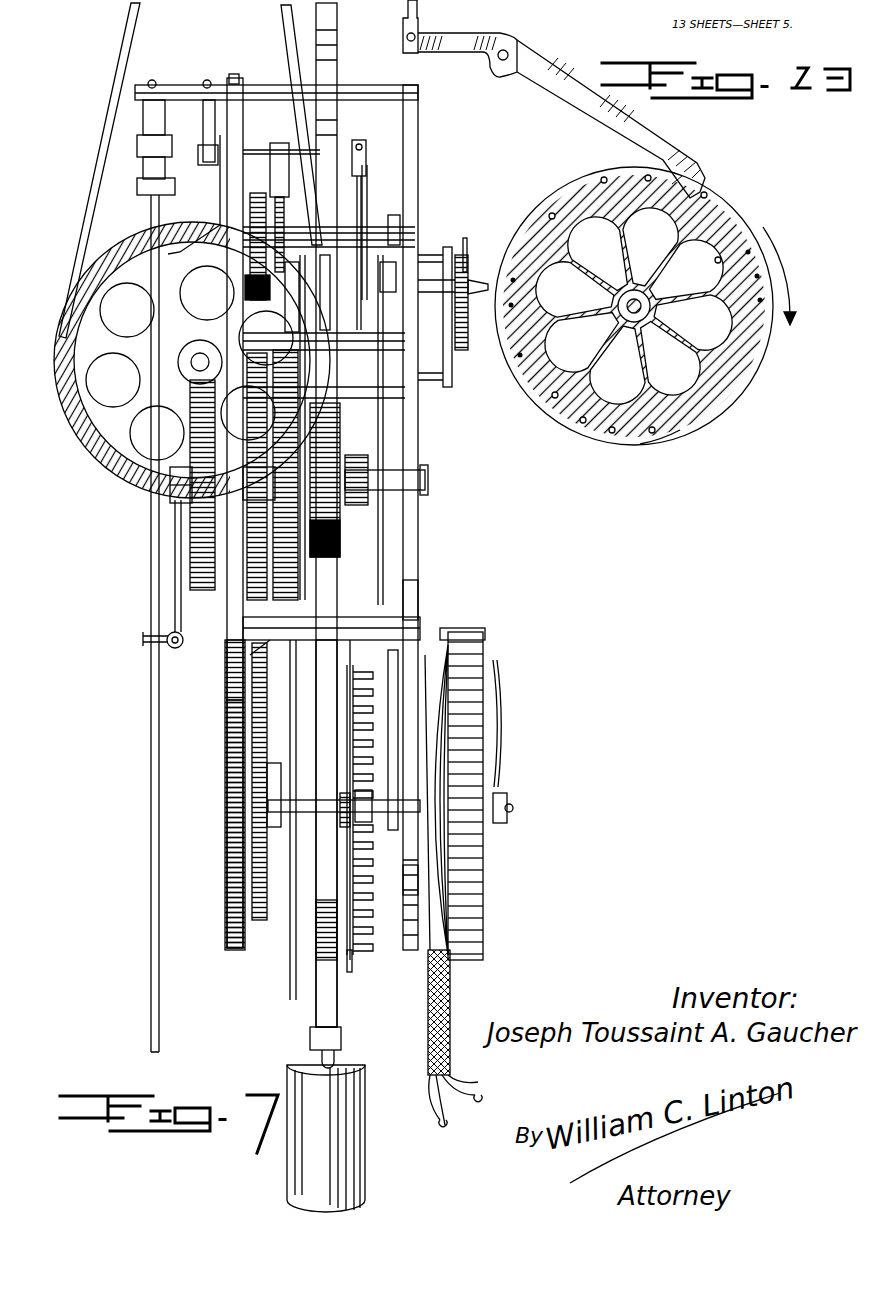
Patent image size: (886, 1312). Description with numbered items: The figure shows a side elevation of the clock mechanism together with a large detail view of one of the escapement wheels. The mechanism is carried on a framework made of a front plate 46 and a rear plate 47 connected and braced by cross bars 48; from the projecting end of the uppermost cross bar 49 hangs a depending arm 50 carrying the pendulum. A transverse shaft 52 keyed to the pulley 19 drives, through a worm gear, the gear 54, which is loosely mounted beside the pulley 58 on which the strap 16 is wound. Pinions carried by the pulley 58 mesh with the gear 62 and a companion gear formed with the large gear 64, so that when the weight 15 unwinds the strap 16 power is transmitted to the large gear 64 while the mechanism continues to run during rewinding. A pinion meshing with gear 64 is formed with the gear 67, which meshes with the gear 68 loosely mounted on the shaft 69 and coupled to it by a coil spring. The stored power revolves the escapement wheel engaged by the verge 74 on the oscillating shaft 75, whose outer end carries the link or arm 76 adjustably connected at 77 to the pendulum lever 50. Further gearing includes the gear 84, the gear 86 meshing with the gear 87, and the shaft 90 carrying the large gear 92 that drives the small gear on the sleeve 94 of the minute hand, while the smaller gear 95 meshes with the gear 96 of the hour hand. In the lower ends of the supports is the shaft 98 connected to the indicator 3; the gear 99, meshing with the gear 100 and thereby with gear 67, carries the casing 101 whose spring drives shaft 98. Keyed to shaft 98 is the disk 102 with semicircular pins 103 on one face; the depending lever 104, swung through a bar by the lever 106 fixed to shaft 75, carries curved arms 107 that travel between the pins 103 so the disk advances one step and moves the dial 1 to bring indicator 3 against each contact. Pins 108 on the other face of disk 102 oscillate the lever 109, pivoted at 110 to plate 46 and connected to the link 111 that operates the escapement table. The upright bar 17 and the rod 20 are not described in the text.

In FIG. 7, the dial 1 is at (485, 870).
In FIG. 7, the indicator 3 is at (498, 720).
In FIG. 7, the weight 15 is at (366, 1166).
In FIG. 7, the strap 16 is at (320, 975).
In FIG. 7, the upright bar 17 is at (337, 40).
In FIG. 7, the pulley 19 is at (125, 278).
In FIG. 7, the rod 20 is at (138, 24).
In FIG. 7, the front plate 46 is at (416, 558).
In FIG. 7, the rear plate 47 is at (235, 672).
In FIG. 7, the cross bars 48 is at (306, 640).
In FIG. 7, the uppermost cross bar 49 is at (172, 93).
In FIG. 7, the depending arm 50 is at (151, 806).
In FIG. 7, the transversely extending shaft 52 is at (190, 372).
In FIG. 7, the gear 54 is at (185, 545).
In FIG. 7, the pulley 58 is at (345, 542).
In FIG. 7, the gear 62 is at (372, 480).
In FIG. 7, the large gear 64 is at (280, 570).
In FIG. 7, the gear 67 is at (200, 480).
In FIG. 7, the gear 68 is at (259, 215).
In FIG. 7, the shaft 69 is at (410, 228).
In FIG. 7, the verge 74 is at (279, 175).
In FIG. 7, the oscillating shaft 75 is at (335, 158).
In FIG. 7, the link or arm 76 is at (178, 283).
In FIG. 7, the adjustable connection 77 is at (172, 650).
In FIG. 7, the gear 84 is at (400, 240).
In FIG. 7, the gear 86 is at (340, 336).
In FIG. 7, the gear 87 is at (377, 282).
In FIG. 7, the shaft 90 is at (432, 322).
In FIG. 7, the large gear 92 is at (485, 280).
In FIG. 7, the sleeve 94 is at (517, 213).
In FIG. 7, the smaller gear 95 is at (468, 330).
In FIG. 7, the gear 96 is at (465, 245).
In FIG. 7, the shaft 98 is at (348, 815).
In FIG. 13, the shaft 98 is at (634, 316).
In FIG. 7, the gear 99 is at (250, 900).
In FIG. 7, the gear 100 is at (250, 653).
In FIG. 7, the casing 101 is at (262, 790).
In FIG. 7, the disk 102 is at (352, 970).
In FIG. 13, the disk 102 is at (677, 428).
In FIG. 7, the pins 103 is at (405, 878).
In FIG. 7, the depending lever 104 is at (392, 683).
In FIG. 7, the lever 106 is at (368, 200).
In FIG. 7, the curved arms or pins 107 is at (372, 812).
In FIG. 7, the pins 108 is at (318, 938).
In FIG. 13, the pins 108 is at (728, 213).
In FIG. 7, the lever 109 is at (420, 597).
In FIG. 13, the lever 109 is at (675, 158).
In FIG. 13, the pivot 110 is at (512, 50).
In FIG. 13, the link 111 is at (420, 17).